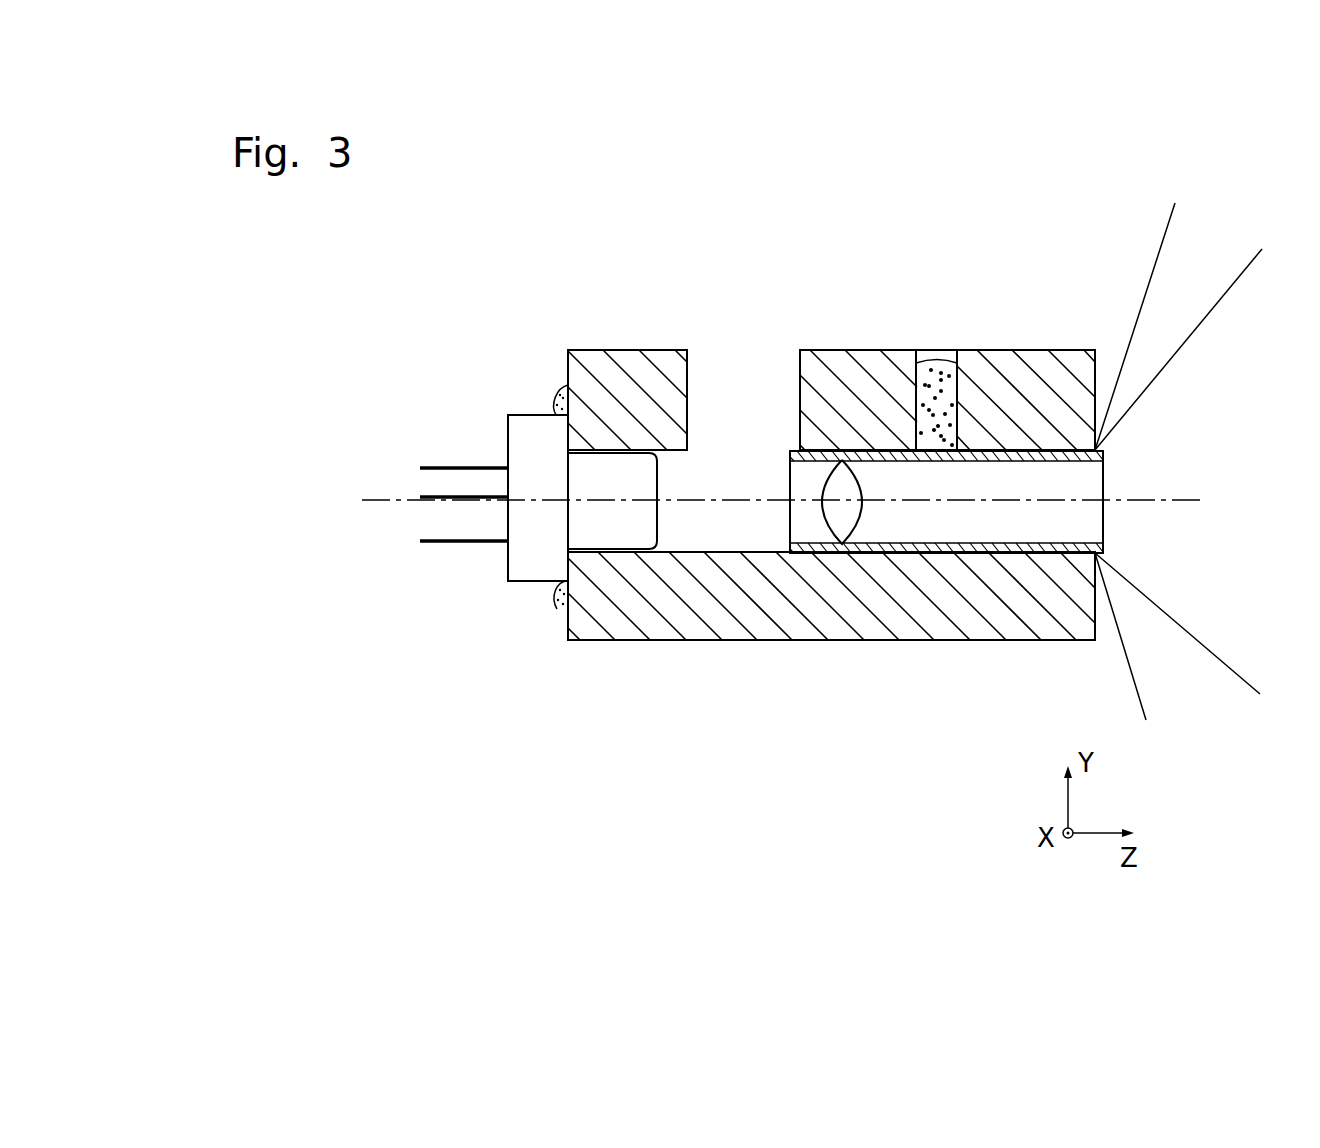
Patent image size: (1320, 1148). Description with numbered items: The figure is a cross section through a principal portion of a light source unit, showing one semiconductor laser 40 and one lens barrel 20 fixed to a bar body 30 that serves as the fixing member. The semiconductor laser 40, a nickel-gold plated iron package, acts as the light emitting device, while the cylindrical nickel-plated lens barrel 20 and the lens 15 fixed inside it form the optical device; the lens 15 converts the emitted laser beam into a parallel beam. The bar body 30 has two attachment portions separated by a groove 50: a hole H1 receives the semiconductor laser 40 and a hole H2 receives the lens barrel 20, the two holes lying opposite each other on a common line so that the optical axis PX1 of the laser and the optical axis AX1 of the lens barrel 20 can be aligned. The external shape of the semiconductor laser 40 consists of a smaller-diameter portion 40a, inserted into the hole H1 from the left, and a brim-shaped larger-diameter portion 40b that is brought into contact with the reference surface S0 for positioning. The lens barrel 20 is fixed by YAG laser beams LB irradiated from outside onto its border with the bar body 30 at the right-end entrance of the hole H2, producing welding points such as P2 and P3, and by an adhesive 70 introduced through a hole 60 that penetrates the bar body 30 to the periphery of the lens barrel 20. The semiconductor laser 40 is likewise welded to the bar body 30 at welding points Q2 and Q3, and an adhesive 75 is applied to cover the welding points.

The lens 15 is at (838, 472).
The lens barrel 20 is at (930, 553).
The bar body 30 is at (770, 640).
The semiconductor laser 40 is at (527, 583).
The smaller-diameter portion 40a is at (657, 480).
The larger-diameter portion 40b is at (510, 571).
The groove 50 is at (730, 372).
The hole 60 is at (920, 352).
The adhesive 70 is at (939, 372).
The adhesive 75 is at (553, 400).
The hole H1 is at (693, 531).
The hole H2 is at (780, 468).
The reference surface S0 is at (566, 366).
The welding point Q2 is at (575, 590).
The welding point Q3 is at (550, 410).
The welding point P2 is at (1104, 557).
The welding point P3 is at (1104, 447).
The optical axis PX1 is at (385, 503).
The optical axis AX1 is at (1182, 503).
The YAG laser beam LB is at (1222, 277).